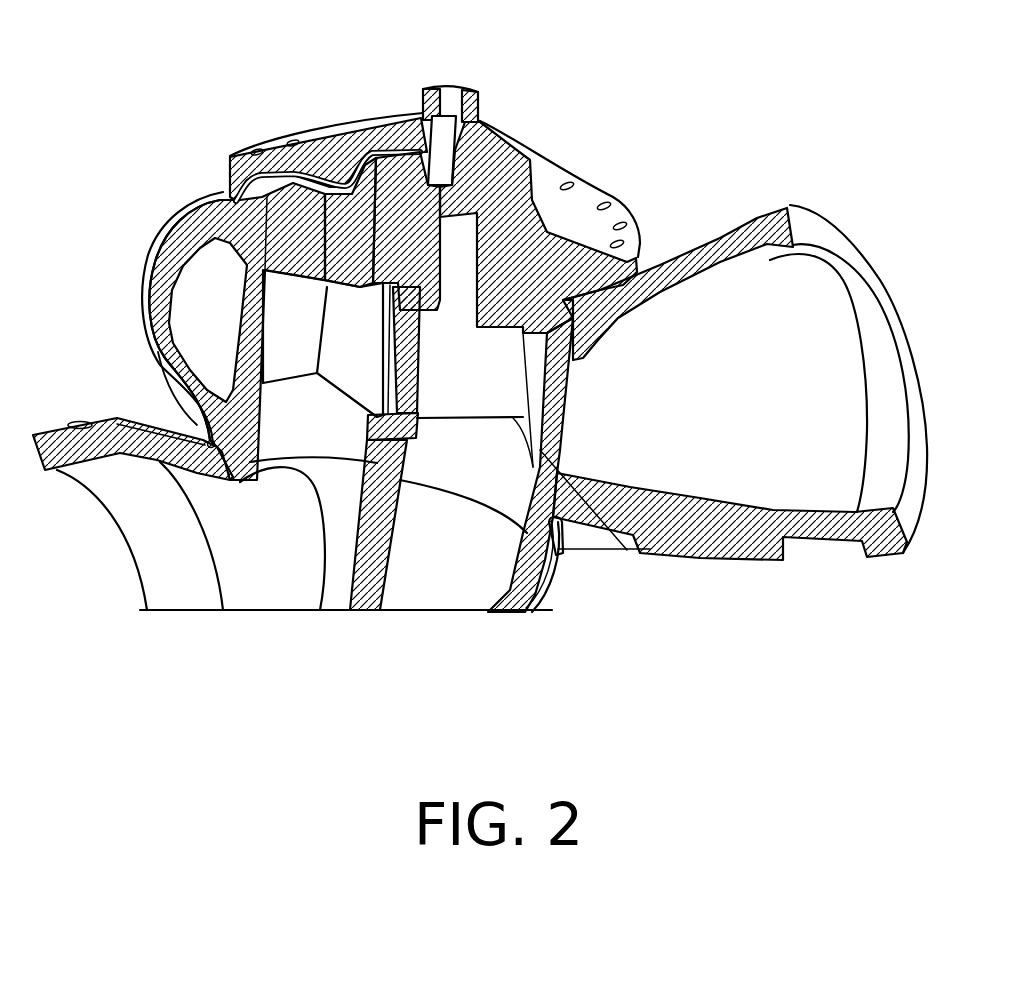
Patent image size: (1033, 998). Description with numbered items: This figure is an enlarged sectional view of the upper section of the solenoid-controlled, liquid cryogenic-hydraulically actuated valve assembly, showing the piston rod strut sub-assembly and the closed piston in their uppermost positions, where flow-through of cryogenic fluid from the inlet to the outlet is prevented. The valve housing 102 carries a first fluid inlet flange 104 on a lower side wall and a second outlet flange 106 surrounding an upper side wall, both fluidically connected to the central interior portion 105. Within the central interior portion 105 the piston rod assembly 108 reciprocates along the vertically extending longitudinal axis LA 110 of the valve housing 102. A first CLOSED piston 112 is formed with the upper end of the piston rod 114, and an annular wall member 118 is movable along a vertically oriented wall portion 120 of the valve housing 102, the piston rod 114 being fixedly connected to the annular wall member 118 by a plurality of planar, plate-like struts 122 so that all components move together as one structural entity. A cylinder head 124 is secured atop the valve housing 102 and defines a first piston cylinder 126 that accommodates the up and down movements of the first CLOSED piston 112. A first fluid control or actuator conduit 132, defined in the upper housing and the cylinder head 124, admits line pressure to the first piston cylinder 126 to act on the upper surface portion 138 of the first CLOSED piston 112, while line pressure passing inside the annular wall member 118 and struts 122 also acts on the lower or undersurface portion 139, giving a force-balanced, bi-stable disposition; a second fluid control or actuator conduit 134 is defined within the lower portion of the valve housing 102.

The longitudinal axis LA is at (455, 76).
The valve housing 102 is at (525, 587).
The first fluid inlet flange 104 is at (115, 480).
The central interior portion 105 is at (491, 545).
The second outlet flange 106 is at (810, 347).
The piston rod assembly 108 is at (347, 547).
The longitudinal axis 110 is at (458, 72).
The first CLOSED piston 112 is at (455, 227).
The piston rod 114 is at (375, 570).
The annular wall member 118 is at (608, 353).
The vertically oriented wall portion 120 is at (175, 353).
The struts 122 is at (622, 548).
The cylinder head 124 is at (573, 213).
The first piston cylinder 126 is at (240, 187).
The first fluid control or actuator conduit 132 is at (177, 222).
The second fluid control or actuator conduit 134 is at (547, 560).
The upper surface portion 138 is at (413, 170).
The lower or undersurface portion 139 is at (505, 215).